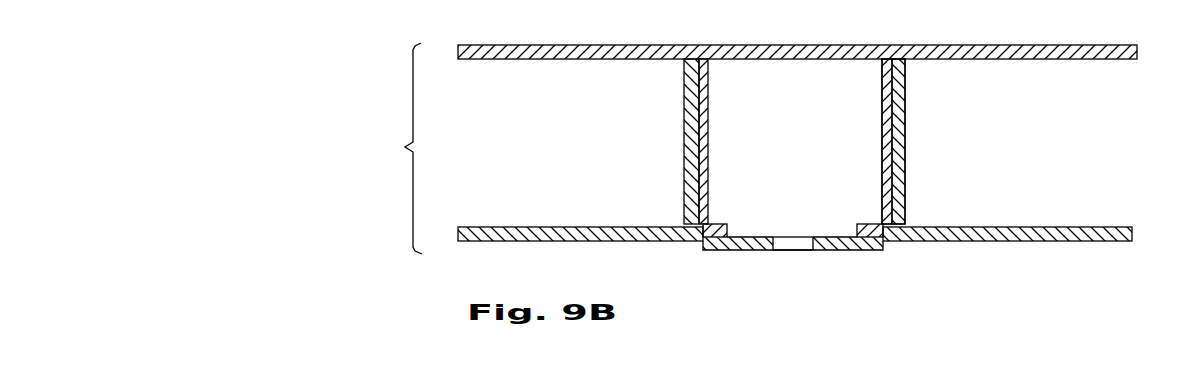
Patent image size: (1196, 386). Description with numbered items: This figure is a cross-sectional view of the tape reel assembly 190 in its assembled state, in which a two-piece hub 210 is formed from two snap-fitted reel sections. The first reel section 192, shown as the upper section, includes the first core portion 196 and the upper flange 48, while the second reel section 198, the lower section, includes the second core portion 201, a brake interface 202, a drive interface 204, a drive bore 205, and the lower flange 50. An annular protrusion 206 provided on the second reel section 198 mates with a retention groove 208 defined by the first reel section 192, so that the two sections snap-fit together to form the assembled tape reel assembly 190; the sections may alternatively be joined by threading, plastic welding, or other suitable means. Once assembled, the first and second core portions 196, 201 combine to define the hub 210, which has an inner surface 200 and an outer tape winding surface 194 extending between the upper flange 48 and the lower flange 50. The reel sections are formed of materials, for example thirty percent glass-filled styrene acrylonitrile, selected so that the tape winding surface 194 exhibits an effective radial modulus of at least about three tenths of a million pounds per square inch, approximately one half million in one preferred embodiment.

The upper flange 48 is at (1140, 51).
The lower flange 50 is at (1133, 236).
The tape reel assembly 190 is at (391, 148).
The first reel section 192 is at (917, 72).
The tape winding surface 194 is at (684, 172).
The first core portion 196 is at (684, 117).
The second reel section 198 is at (720, 141).
The inner surface 200 is at (710, 93).
The second core portion 201 is at (885, 95).
The brake interface 202 is at (717, 224).
The drive interface 204 is at (714, 251).
The drive bore 205 is at (794, 251).
The annular protrusion 206 is at (890, 197).
The retention groove 208 is at (905, 205).
The hub 210 is at (556, 131).